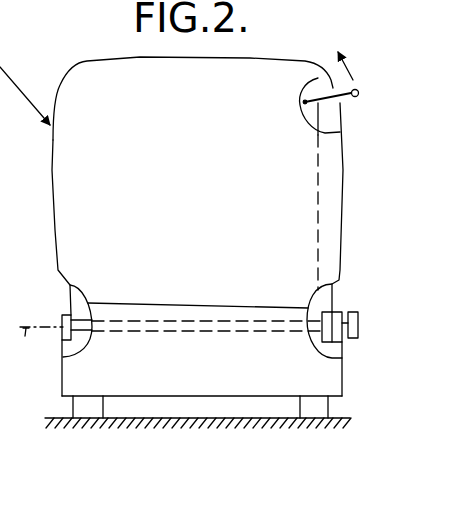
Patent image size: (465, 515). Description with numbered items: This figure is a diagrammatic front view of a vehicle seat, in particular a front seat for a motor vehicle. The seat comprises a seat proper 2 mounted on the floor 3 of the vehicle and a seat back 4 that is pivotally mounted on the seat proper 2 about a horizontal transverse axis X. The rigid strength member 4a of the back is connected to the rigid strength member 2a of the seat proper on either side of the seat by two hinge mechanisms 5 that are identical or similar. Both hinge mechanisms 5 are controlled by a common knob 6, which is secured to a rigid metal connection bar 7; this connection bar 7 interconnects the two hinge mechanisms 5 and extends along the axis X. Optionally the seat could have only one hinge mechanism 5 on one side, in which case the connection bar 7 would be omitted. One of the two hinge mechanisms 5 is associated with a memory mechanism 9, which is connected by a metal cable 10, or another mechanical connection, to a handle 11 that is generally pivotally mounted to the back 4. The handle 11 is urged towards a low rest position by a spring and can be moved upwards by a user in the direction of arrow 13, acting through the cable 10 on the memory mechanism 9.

The seat proper 2 is at (82, 383).
The rigid strength member of the seat proper 2a is at (62, 352).
The floor 3 is at (163, 420).
The seat back 4 is at (195, 165).
The rigid strength member of the back 4a is at (70, 295).
The hinge mechanism 5 is at (62, 315).
The knob 6 is at (361, 303).
The rigid metal connection bar 7 is at (216, 320).
The memory mechanism 9 is at (322, 333).
The metal cable 10 is at (300, 104).
The handle 11 is at (357, 100).
The arrow 13 is at (348, 68).
The horizontal transverse axis X is at (39, 341).